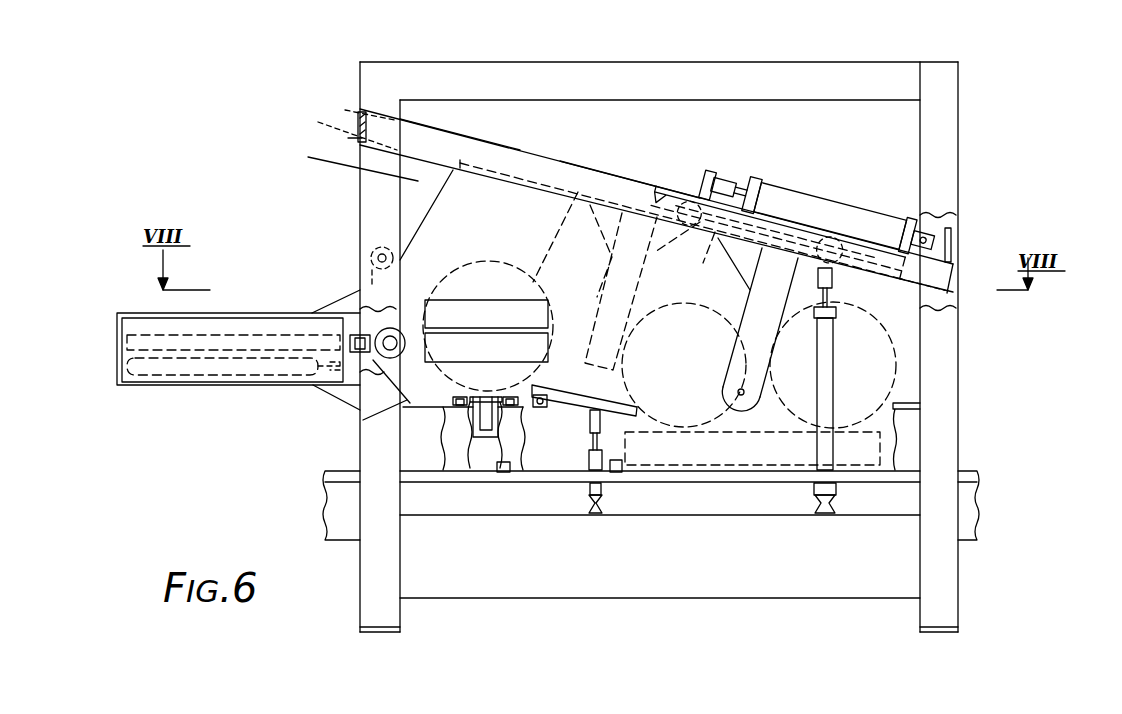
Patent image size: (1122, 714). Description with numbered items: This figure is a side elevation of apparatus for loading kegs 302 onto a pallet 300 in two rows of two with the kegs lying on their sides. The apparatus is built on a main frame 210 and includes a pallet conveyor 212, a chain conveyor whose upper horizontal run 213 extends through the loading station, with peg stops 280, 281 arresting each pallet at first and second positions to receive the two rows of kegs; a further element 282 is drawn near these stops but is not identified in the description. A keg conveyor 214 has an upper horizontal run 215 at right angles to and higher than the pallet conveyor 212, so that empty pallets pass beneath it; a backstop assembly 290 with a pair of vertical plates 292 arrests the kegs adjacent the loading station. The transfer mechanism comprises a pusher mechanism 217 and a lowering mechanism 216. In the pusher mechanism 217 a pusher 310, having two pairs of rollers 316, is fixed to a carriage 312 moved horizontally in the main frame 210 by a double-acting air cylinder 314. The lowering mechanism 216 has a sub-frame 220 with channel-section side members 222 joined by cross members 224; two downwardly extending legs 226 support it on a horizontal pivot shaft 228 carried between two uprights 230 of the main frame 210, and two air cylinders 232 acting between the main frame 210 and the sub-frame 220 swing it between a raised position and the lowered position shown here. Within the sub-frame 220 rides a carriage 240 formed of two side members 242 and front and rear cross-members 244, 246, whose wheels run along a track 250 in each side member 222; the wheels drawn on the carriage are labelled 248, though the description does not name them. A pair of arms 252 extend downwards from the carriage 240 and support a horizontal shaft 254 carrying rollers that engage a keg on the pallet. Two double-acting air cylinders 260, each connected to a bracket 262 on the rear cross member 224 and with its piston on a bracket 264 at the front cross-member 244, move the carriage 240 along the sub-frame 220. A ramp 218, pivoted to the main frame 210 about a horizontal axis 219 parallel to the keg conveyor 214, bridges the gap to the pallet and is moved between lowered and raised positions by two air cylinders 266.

The main frame 210 is at (505, 80).
The pallet conveyor 212 is at (342, 472).
The upper horizontal run 213 is at (903, 478).
The keg conveyor 214 is at (458, 437).
The upper horizontal run 215 is at (452, 402).
The lowering mechanism 216 is at (583, 148).
The pusher mechanism 217 is at (250, 313).
The ramp 218 is at (597, 397).
The horizontal axis 219 is at (542, 412).
The sub-frame 220 is at (606, 186).
The side members 222 is at (447, 150).
The cross members 224 is at (356, 128).
The legs 226 is at (341, 163).
The pivot shaft 228 is at (372, 250).
The uprights 230 is at (370, 82).
The air cylinders 232 is at (823, 362).
The carriage 240 is at (782, 235).
The side members 242 is at (758, 238).
The front cross-member 244 is at (672, 190).
The rear cross-member 246 is at (855, 278).
The rollers 248 is at (882, 226).
The track 250 is at (532, 183).
The arms 252 is at (745, 306).
The horizontal shaft 254 is at (738, 391).
The air cylinders 260 is at (830, 212).
The bracket 262 is at (955, 237).
The bracket 264 is at (716, 185).
The air cylinders 266 is at (600, 487).
The peg stop 280 is at (618, 471).
The peg stop 281 is at (505, 472).
The clamp 282 is at (487, 437).
The backstop assembly 290 is at (437, 310).
The vertical plates 292 is at (493, 347).
The pallet 300 is at (728, 433).
The kegs 302 is at (557, 268).
The pusher 310 is at (380, 333).
The carriage 312 is at (223, 378).
The air cylinder 314 is at (170, 378).
The rollers 316 is at (365, 392).